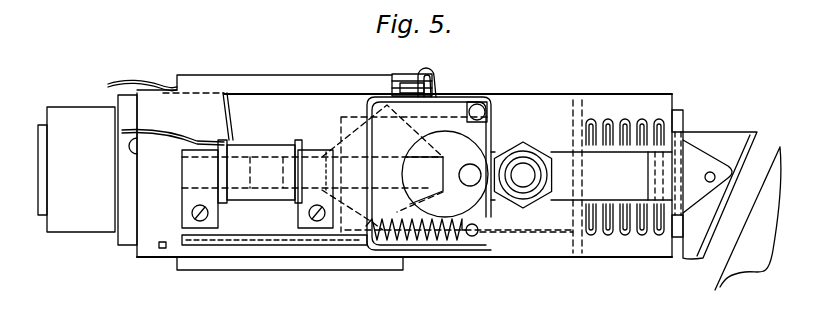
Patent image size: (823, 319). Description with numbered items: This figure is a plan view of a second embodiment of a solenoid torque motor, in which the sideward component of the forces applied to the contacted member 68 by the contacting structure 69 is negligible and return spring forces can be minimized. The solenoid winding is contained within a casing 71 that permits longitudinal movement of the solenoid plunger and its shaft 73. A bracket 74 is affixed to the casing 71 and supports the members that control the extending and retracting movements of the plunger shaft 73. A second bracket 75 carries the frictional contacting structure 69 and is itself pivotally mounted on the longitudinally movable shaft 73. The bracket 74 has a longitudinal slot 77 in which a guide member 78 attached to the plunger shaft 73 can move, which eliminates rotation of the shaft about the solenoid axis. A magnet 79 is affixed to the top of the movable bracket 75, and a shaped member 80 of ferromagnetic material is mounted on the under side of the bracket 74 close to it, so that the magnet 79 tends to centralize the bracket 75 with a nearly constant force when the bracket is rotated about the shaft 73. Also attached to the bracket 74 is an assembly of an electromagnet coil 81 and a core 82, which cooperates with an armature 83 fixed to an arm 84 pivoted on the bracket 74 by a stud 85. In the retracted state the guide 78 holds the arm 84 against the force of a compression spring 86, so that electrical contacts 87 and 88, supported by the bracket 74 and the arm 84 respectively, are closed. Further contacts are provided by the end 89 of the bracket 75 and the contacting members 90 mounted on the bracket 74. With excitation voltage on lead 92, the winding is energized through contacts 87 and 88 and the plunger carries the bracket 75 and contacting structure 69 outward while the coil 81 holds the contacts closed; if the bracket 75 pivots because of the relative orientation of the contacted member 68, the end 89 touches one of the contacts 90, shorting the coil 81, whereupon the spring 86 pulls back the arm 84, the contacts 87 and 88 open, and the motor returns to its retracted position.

The contacted member 68 is at (727, 270).
The contacting structure 69 is at (720, 128).
The casing 71 is at (72, 105).
The plunger shaft 73 is at (527, 176).
The bracket 74 is at (624, 96).
The bracket 75 is at (566, 163).
The longitudinal slot 77 is at (566, 198).
The guide member 78 is at (514, 204).
The magnet 79 is at (443, 191).
The ferromagnetic member 80 is at (428, 152).
The electromagnet coil 81 is at (261, 149).
The core 82 is at (187, 204).
The armature 83 is at (252, 236).
The arm 84 is at (372, 140).
The stud 85 is at (487, 112).
The compression spring 86 is at (442, 243).
The electrical contact 87 is at (390, 80).
The electrical contact 88 is at (434, 82).
The end of bracket 89 is at (180, 172).
The contacting members 90 is at (162, 253).
The lead 92 is at (108, 82).